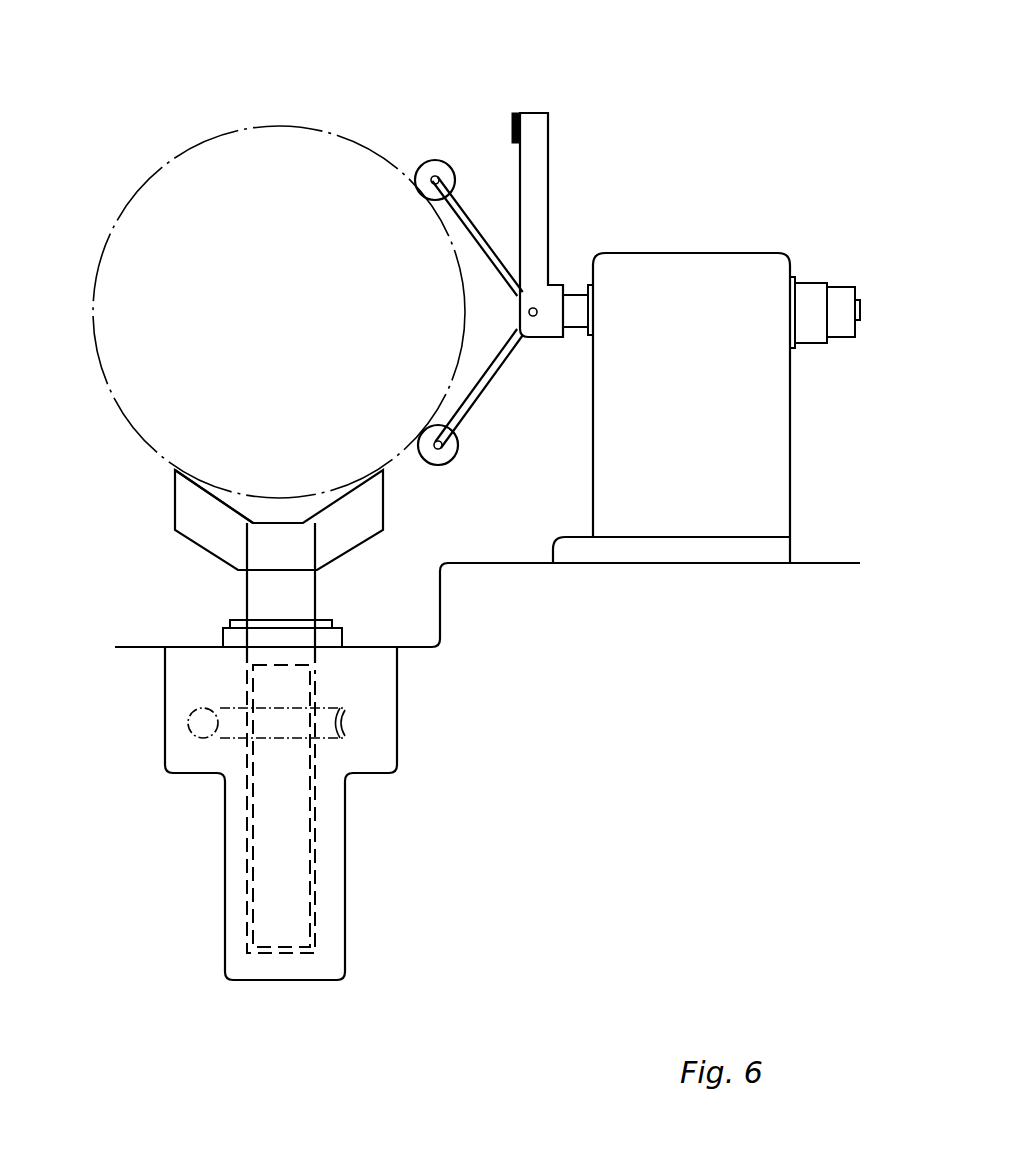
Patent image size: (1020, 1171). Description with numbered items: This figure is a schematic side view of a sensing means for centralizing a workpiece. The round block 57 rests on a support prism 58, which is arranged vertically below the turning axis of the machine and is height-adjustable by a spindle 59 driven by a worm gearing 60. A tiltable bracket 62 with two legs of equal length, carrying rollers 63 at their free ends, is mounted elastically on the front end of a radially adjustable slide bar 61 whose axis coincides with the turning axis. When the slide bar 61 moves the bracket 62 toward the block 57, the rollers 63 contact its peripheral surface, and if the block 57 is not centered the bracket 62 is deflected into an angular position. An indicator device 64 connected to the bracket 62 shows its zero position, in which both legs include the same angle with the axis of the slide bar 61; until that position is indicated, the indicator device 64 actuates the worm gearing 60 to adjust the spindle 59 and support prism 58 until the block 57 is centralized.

The round block 57 is at (265, 158).
The support prism 58 is at (365, 520).
The spindle 59 is at (288, 888).
The worm gearing 60 is at (238, 735).
The slide bar 61 is at (575, 320).
The tiltable bracket 62 is at (484, 375).
The rollers 63 is at (436, 178).
The indicator device 64 is at (520, 132).